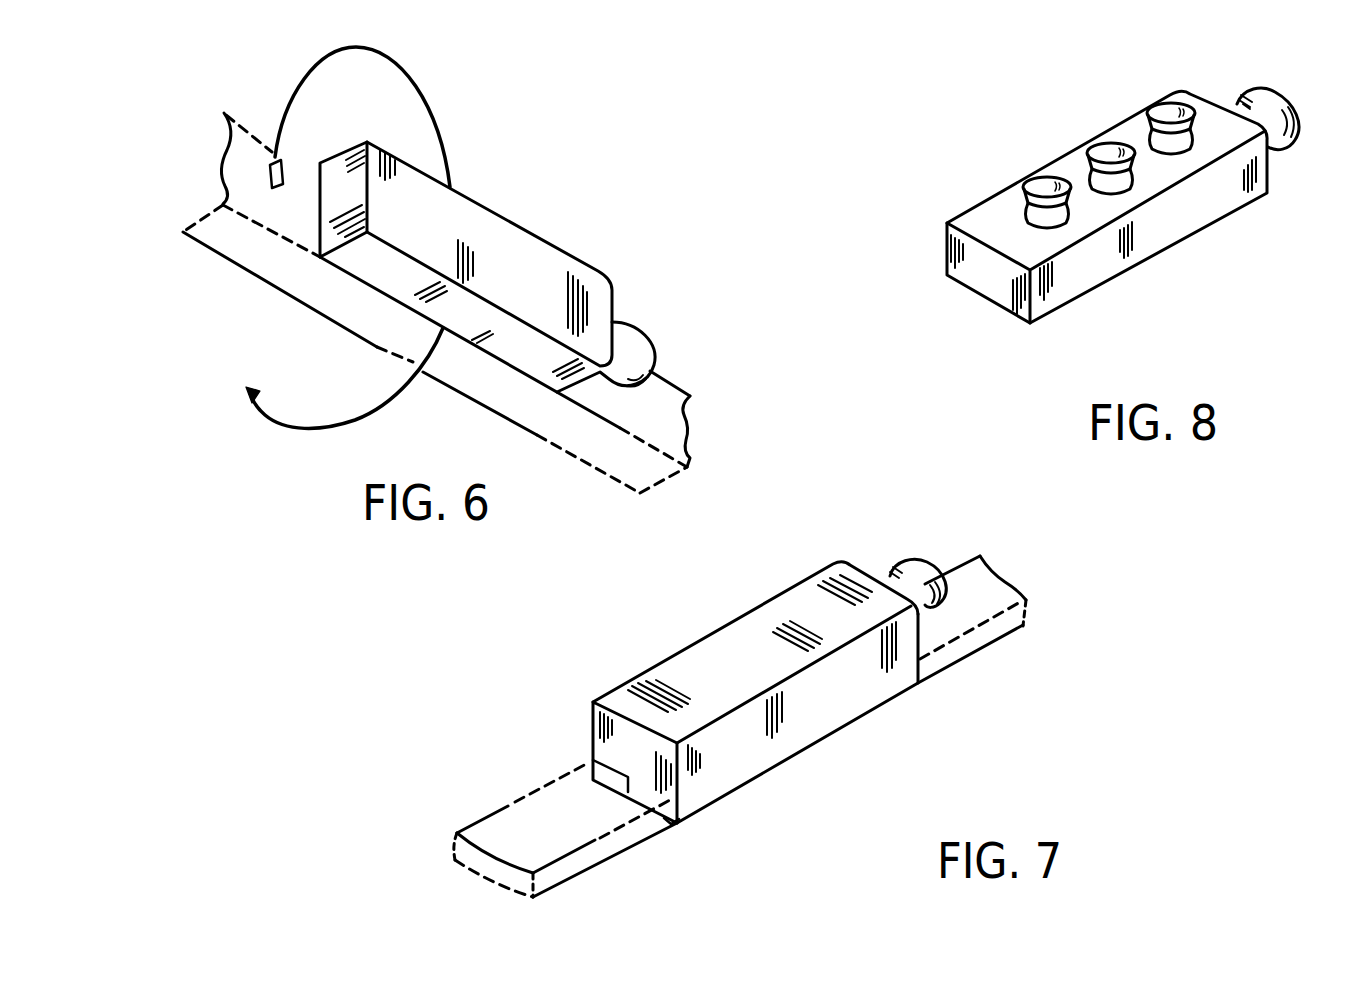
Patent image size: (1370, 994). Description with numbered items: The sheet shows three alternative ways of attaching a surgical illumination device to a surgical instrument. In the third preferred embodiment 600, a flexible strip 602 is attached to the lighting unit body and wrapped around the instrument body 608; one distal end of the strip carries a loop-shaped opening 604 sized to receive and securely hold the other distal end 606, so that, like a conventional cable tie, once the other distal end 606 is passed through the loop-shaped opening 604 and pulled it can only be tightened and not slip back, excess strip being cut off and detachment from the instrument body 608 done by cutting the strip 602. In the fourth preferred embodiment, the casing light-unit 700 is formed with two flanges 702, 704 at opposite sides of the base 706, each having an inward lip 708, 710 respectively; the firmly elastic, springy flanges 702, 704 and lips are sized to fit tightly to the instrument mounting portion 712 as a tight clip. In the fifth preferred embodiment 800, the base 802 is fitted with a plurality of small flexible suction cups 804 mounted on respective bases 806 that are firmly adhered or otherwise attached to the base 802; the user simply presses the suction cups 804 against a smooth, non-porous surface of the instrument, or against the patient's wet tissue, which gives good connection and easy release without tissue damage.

In FIG. 6, the third preferred embodiment 600 is at (661, 326).
In FIG. 6, the flexible strip 602 is at (434, 112).
In FIG. 6, the loop-shaped opening 604 is at (284, 171).
In FIG. 6, the other distal end 606 is at (243, 388).
In FIG. 6, the instrument body 608 is at (690, 440).
In FIG. 7, the casing light-unit 700 is at (952, 683).
In FIG. 7, the flange 702 is at (588, 766).
In FIG. 7, the flange 704 is at (713, 787).
In FIG. 7, the base 706 is at (643, 783).
In FIG. 7, the inward lip 708 is at (593, 778).
In FIG. 7, the inward lip 710 is at (668, 822).
In FIG. 7, the instrument mounting portion 712 is at (497, 880).
In FIG. 8, the fifth preferred embodiment 800 is at (1021, 152).
In FIG. 8, the base 802 is at (1230, 133).
In FIG. 8, the suction cups 804 is at (1037, 183).
In FIG. 8, the bases 806 is at (1063, 213).